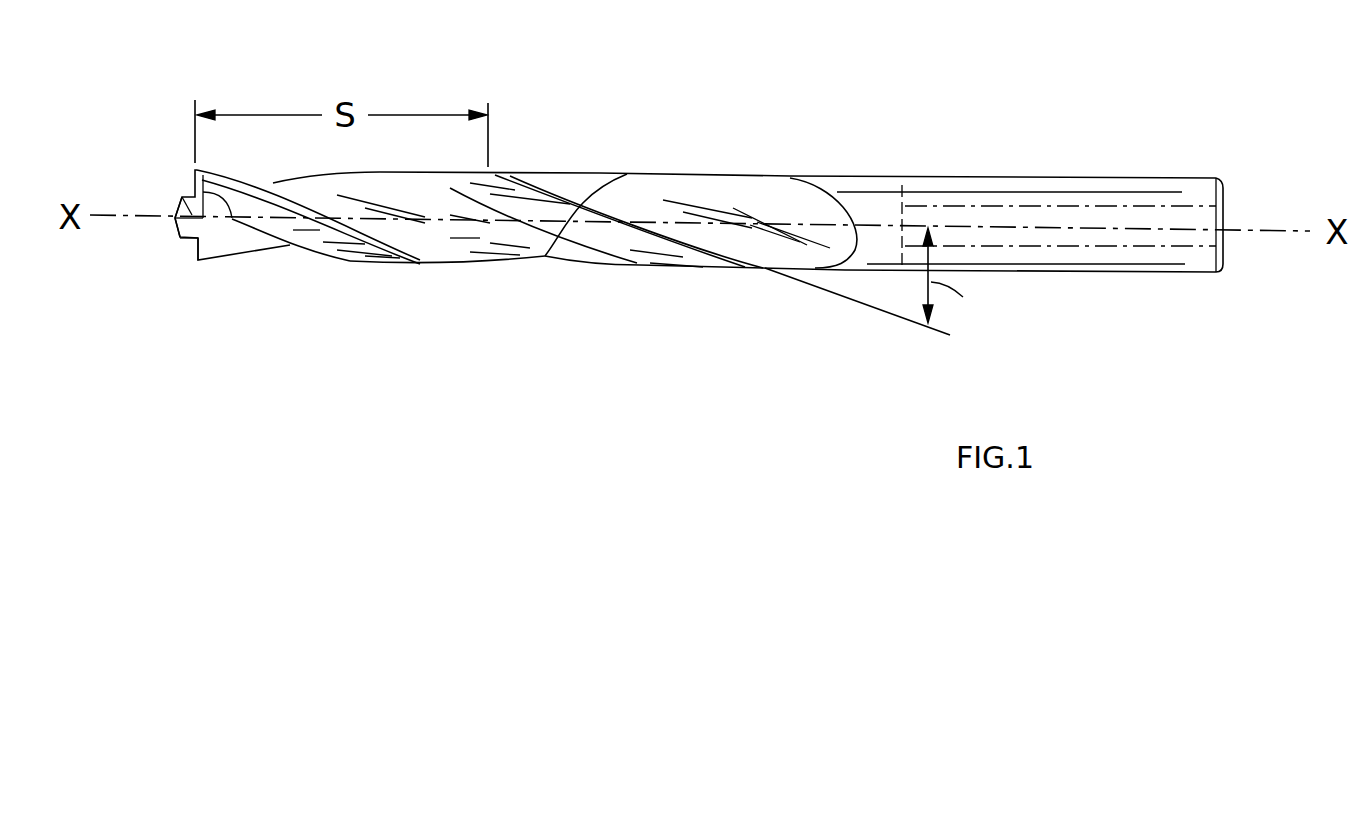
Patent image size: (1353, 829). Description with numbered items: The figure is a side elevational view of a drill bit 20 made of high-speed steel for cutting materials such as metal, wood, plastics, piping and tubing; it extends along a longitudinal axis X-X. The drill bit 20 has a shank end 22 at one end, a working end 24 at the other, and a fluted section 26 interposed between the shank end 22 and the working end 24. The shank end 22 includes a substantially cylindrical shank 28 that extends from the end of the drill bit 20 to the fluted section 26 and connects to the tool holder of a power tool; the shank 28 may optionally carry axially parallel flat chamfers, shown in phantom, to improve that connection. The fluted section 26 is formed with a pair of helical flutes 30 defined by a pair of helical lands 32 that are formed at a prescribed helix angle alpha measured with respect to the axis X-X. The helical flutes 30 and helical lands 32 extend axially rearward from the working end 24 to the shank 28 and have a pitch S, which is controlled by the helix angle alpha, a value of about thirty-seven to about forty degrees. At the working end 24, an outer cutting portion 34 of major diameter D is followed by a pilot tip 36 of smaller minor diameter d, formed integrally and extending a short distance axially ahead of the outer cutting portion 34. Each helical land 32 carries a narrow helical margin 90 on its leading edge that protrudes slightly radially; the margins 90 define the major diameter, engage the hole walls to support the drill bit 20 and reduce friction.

The drill bit 20 is at (776, 111).
The shank end 22 is at (1167, 302).
The working end 24 is at (168, 182).
The fluted section 26 is at (197, 352).
The shank 28 is at (1073, 210).
The helical flutes 30 is at (453, 240).
The helical lands 32 is at (313, 232).
The outer cutting portion 34 is at (186, 268).
The pilot tip 36 is at (176, 242).
The helical margin 90 is at (562, 250).